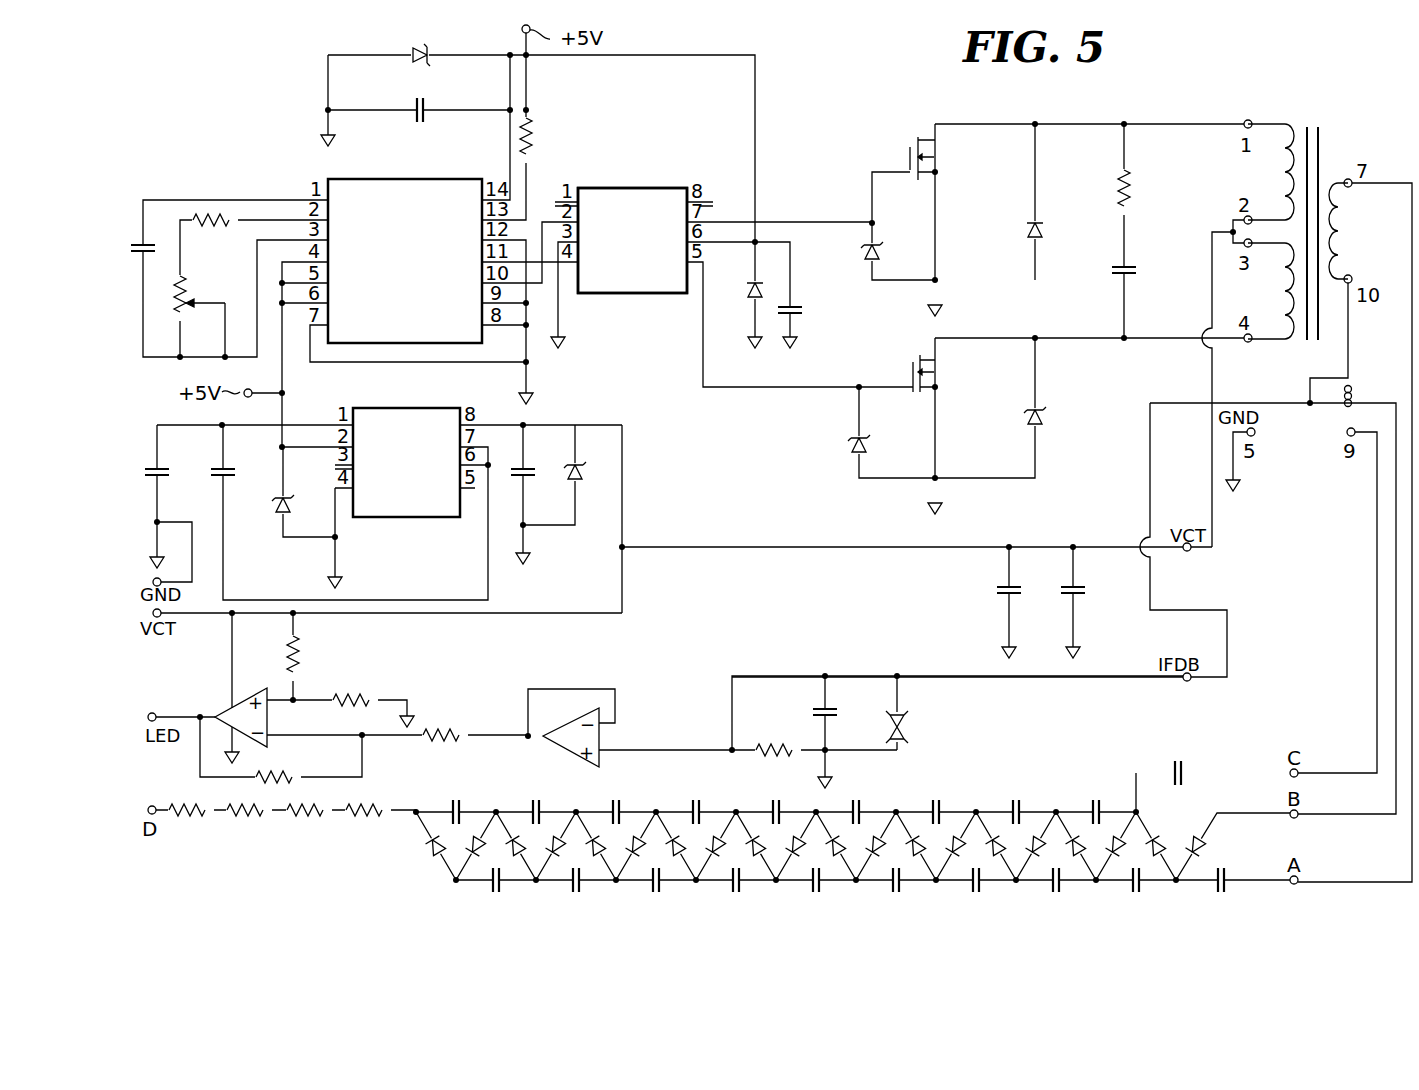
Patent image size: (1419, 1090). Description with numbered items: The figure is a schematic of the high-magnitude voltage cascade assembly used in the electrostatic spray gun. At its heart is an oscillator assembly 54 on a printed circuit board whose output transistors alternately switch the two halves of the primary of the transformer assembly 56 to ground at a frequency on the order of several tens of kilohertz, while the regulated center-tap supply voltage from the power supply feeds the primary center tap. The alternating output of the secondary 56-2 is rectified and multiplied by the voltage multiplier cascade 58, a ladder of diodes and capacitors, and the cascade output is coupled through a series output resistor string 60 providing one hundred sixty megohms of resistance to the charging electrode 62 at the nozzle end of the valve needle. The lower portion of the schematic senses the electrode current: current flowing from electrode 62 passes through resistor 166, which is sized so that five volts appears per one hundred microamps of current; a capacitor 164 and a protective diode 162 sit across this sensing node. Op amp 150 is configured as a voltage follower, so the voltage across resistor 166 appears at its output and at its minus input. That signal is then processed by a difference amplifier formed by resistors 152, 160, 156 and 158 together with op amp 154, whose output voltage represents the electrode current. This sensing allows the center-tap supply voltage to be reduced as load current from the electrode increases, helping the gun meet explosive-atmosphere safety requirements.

The oscillator assembly 54 is at (775, 145).
The transformer assembly 56 is at (1325, 200).
The secondary winding 56-2 is at (1338, 242).
The voltage multiplier cascade 58 is at (979, 808).
The series output resistor string 60 is at (388, 845).
The charging electrode 62 is at (153, 803).
The op amp 150 is at (612, 741).
The resistor 152 is at (444, 727).
The op amp 154 is at (271, 718).
The resistor 156 is at (355, 697).
The resistor 158 is at (299, 677).
The resistor 160 is at (282, 776).
The transient voltage suppressor diode 162 is at (907, 716).
The filter capacitor 164 is at (834, 706).
The resistor 166 is at (766, 746).